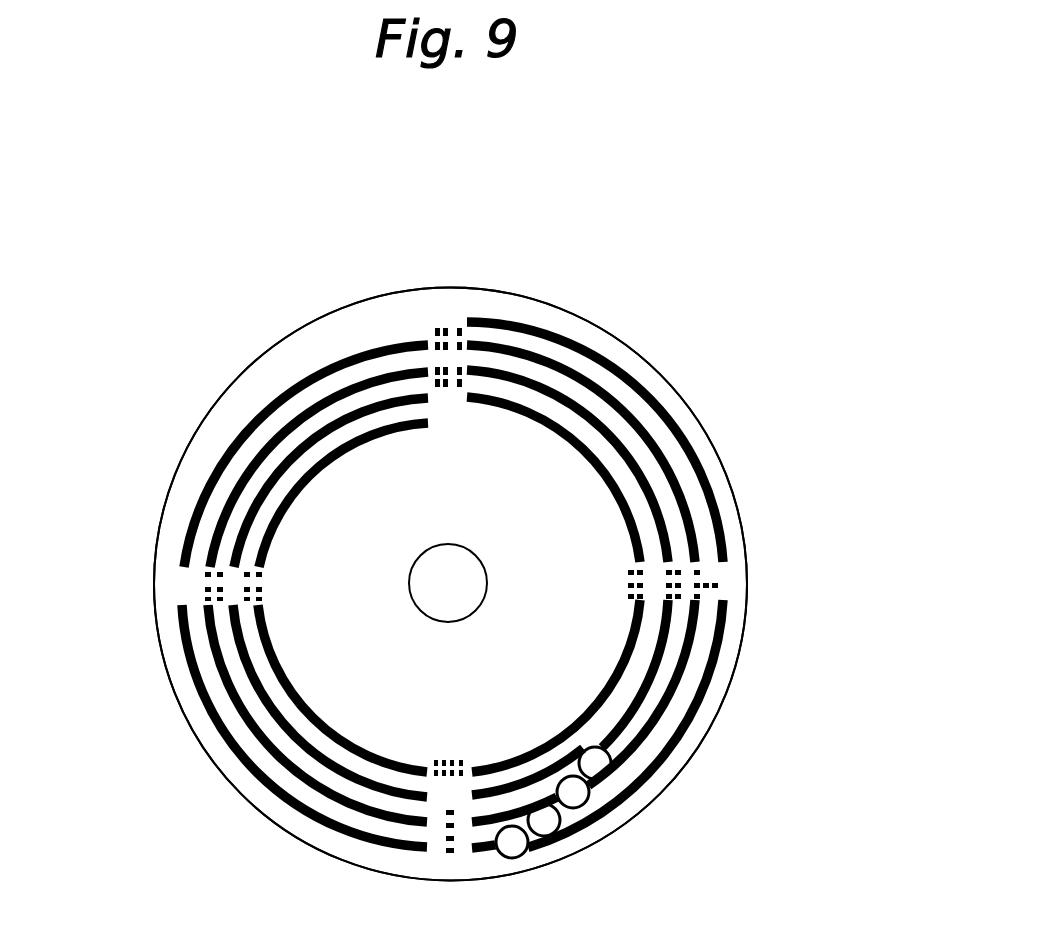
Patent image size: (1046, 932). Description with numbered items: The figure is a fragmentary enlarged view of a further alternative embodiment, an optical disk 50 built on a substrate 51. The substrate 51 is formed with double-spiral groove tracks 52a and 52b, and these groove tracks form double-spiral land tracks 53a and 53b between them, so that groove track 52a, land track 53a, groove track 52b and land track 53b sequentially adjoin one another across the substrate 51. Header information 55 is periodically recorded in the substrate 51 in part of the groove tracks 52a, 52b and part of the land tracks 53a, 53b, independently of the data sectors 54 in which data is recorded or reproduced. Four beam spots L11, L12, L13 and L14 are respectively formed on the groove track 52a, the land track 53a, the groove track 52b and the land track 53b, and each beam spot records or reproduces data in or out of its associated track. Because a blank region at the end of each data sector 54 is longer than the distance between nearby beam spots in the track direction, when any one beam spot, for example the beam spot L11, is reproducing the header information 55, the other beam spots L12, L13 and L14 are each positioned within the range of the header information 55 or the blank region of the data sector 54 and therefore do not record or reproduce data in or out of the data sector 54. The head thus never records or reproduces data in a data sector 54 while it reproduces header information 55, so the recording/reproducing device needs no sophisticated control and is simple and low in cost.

The optical disk 50 is at (814, 146).
The substrate 51 is at (591, 322).
The groove track 52a is at (614, 364).
The groove track 52b is at (634, 414).
The land track 53a is at (705, 647).
The land track 53b is at (650, 702).
The data sector 54 is at (700, 762).
The header information 55 is at (735, 580).
The beam spot L11 is at (504, 825).
The beam spot L12 is at (538, 803).
The beam spot L13 is at (569, 775).
The beam spot L14 is at (593, 746).